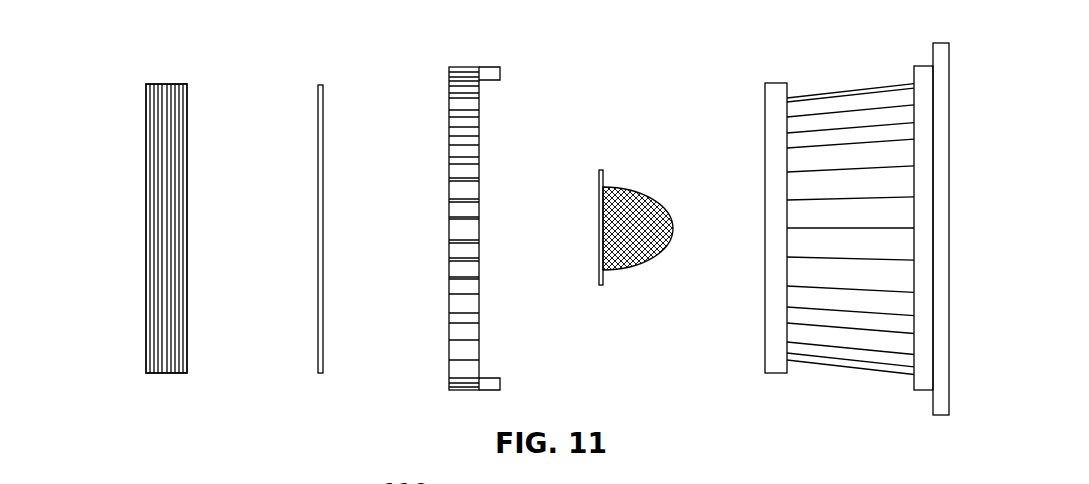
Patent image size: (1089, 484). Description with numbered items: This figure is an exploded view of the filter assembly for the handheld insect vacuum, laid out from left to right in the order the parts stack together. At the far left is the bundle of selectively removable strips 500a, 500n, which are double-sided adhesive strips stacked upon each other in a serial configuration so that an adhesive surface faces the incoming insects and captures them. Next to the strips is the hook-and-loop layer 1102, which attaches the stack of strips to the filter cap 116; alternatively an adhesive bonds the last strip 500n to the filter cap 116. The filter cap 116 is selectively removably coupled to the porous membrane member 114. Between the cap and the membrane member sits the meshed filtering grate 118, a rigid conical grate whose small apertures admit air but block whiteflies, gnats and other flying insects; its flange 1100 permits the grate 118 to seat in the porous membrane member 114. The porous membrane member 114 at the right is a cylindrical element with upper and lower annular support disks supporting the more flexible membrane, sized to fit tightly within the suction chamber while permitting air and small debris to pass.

The selectively removable strip 500a is at (146, 84).
The last selectively removable strip 500n is at (187, 84).
The hook-and-loop layer 1102 is at (318, 89).
The filter cap 116 is at (465, 108).
The flange 1100 is at (603, 183).
The meshed filtering grate 118 is at (628, 263).
The porous membrane member 114 is at (892, 327).